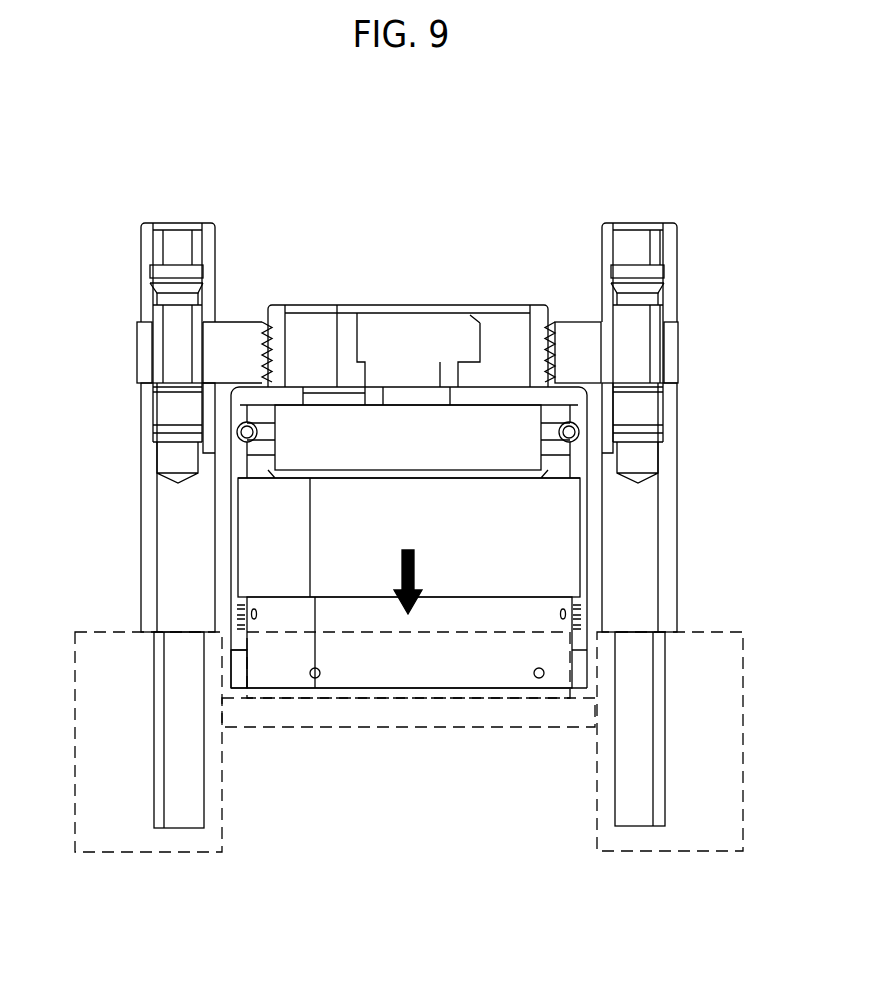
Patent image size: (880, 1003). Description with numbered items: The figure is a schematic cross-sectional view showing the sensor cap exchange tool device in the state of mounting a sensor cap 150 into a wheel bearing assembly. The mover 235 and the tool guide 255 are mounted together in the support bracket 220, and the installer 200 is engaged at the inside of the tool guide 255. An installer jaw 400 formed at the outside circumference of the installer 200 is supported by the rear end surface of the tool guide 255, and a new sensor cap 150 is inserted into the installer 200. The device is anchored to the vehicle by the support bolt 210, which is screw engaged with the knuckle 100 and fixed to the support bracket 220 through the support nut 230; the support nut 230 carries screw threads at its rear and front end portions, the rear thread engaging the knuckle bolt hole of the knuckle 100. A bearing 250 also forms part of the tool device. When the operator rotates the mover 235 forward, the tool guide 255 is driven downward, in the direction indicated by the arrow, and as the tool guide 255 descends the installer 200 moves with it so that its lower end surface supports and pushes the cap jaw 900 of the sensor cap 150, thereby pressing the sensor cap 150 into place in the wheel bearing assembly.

The knuckle 100 is at (120, 813).
The sensor cap 150 is at (397, 717).
The installer 200 is at (577, 667).
The support bolt 210 is at (148, 538).
The support bracket 220 is at (215, 352).
The support nut 230 is at (145, 243).
The mover 235 is at (278, 343).
The bearing 250 is at (578, 430).
The tool guide 255 is at (582, 533).
The installer jaw 400 is at (583, 637).
The cap jaw 900 is at (234, 688).